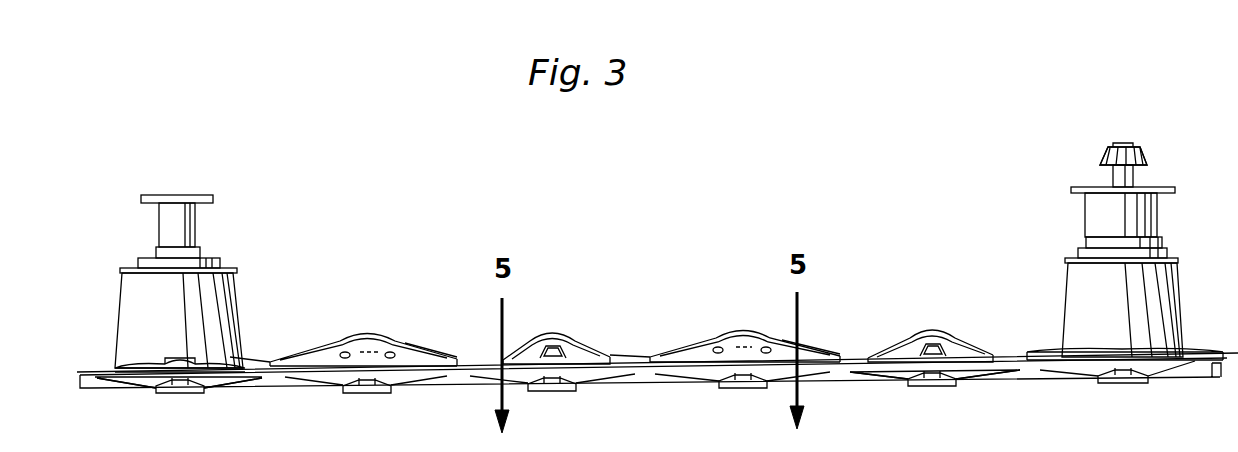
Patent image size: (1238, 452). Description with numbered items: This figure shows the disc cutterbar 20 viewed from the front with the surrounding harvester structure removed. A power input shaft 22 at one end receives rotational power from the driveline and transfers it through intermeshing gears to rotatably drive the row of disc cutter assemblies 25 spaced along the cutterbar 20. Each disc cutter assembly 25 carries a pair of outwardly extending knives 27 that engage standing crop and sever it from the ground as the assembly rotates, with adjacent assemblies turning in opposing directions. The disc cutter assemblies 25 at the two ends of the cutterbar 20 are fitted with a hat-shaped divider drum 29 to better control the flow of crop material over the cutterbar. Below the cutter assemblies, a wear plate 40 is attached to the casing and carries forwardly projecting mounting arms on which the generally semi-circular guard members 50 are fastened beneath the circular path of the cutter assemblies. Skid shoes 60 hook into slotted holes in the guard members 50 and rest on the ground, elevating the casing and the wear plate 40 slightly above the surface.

The disc cutterbar 20 is at (374, 228).
The power input shaft 22 is at (1113, 172).
The disc cutter assembly 25 is at (242, 367).
The knife 27 is at (630, 362).
The divider drum 29 is at (237, 290).
The wear plate 40 is at (270, 380).
The guard member 50 is at (147, 381).
The skid shoe 60 is at (370, 393).